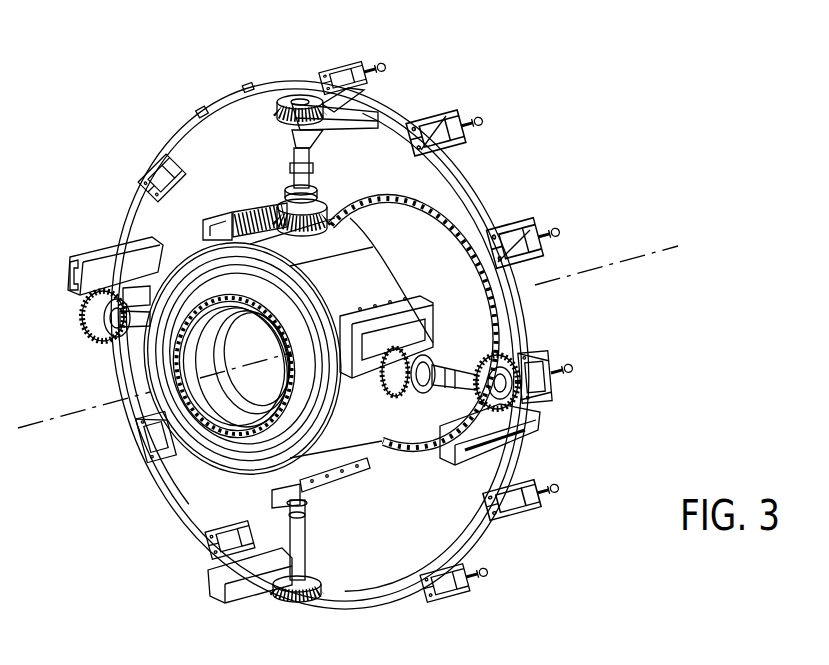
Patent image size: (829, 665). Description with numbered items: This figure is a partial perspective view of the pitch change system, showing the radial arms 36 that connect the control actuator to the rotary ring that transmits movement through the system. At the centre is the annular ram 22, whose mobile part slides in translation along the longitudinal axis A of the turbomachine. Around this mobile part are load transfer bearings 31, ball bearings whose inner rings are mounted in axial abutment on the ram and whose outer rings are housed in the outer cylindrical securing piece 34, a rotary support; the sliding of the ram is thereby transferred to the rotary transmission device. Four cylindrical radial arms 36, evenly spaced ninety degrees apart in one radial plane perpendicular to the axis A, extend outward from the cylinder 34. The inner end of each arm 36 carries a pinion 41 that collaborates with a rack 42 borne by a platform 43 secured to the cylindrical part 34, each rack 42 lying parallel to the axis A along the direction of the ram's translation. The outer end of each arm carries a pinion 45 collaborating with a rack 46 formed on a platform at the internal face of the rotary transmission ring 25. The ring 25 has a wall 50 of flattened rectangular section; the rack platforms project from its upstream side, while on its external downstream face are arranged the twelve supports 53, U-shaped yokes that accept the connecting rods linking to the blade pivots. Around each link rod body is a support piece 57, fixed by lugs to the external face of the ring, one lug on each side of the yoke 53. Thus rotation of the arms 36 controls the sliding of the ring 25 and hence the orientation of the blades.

The annular ram 22 is at (200, 437).
The rotary transmission ring 25 is at (158, 118).
The load transfer bearings 31 is at (247, 460).
The outer cylindrical securing piece 34 is at (370, 432).
The radial arms 36 is at (258, 100).
The pinion 41 is at (340, 207).
The rack 42 is at (267, 202).
The platform 43 is at (210, 222).
The pinion 45 is at (292, 95).
The rack 46 is at (330, 200).
The wall 50 is at (472, 188).
The supports 53 is at (443, 113).
The support piece 57 is at (480, 132).
The longitudinal axis A is at (657, 250).